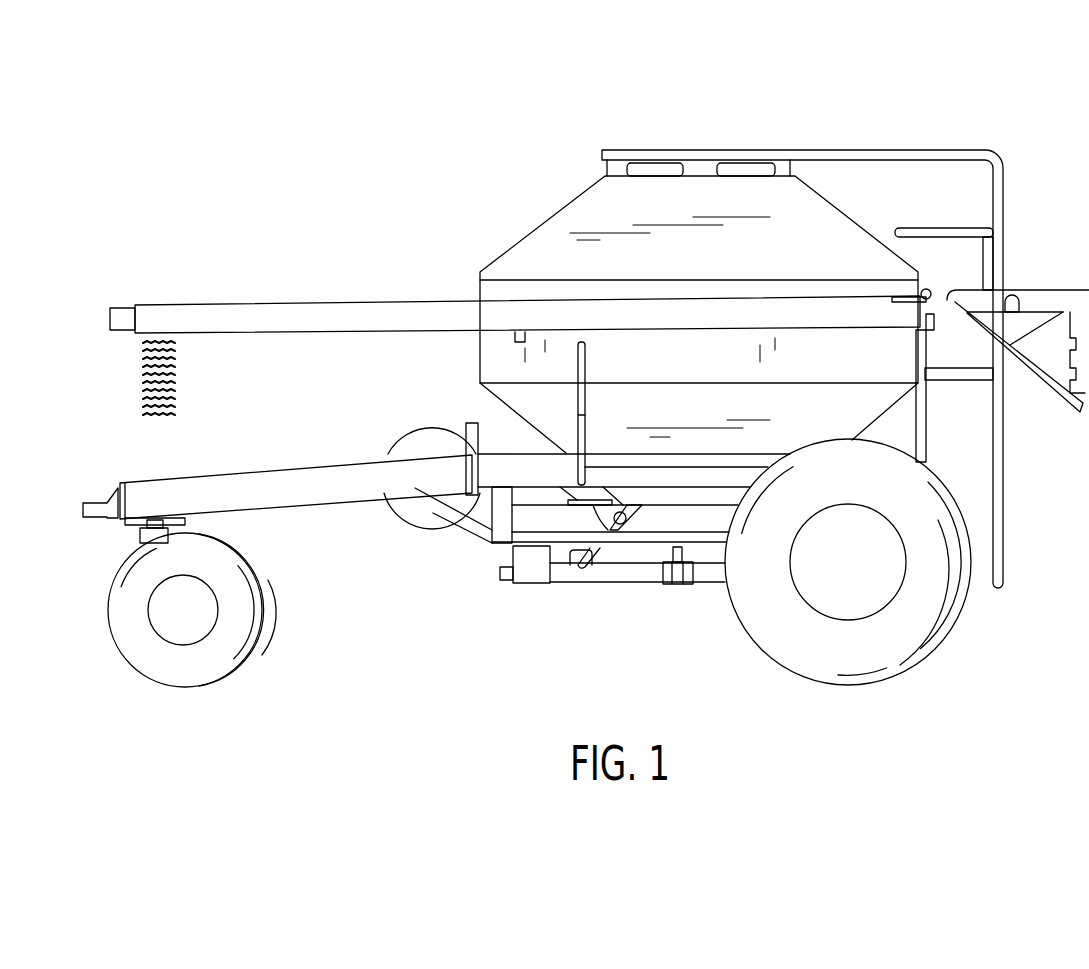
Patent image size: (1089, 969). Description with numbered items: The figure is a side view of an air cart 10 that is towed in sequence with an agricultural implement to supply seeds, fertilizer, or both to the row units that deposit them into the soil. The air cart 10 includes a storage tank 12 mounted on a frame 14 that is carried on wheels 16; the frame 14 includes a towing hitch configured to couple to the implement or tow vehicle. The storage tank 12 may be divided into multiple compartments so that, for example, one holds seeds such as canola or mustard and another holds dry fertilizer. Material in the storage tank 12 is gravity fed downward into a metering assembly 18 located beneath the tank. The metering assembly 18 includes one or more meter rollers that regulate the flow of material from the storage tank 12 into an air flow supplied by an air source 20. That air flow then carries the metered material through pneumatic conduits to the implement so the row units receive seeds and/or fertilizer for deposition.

The air cart 10 is at (543, 106).
The storage tank 12 is at (582, 210).
The frame 14 is at (290, 468).
The wheels 16 is at (130, 664).
The metering assembly 18 is at (643, 535).
The air source 20 is at (396, 437).